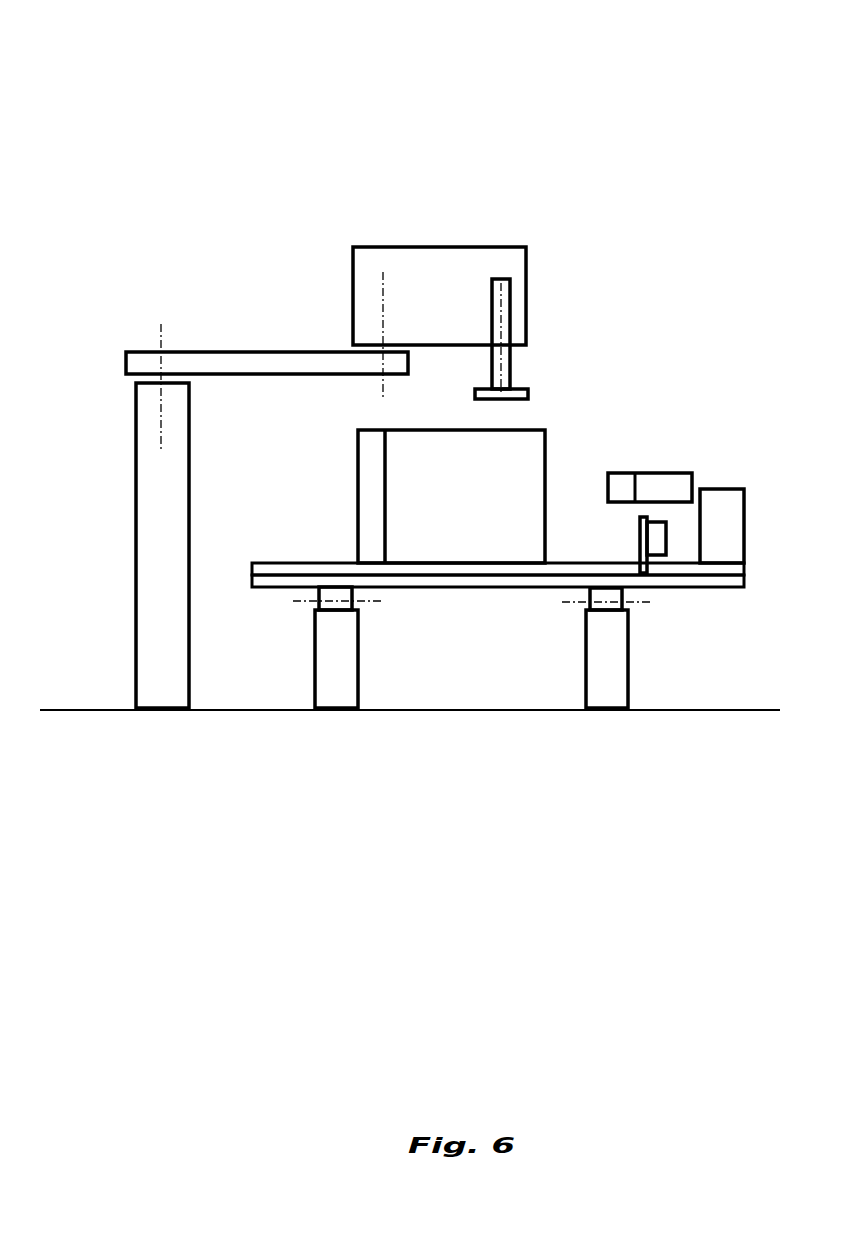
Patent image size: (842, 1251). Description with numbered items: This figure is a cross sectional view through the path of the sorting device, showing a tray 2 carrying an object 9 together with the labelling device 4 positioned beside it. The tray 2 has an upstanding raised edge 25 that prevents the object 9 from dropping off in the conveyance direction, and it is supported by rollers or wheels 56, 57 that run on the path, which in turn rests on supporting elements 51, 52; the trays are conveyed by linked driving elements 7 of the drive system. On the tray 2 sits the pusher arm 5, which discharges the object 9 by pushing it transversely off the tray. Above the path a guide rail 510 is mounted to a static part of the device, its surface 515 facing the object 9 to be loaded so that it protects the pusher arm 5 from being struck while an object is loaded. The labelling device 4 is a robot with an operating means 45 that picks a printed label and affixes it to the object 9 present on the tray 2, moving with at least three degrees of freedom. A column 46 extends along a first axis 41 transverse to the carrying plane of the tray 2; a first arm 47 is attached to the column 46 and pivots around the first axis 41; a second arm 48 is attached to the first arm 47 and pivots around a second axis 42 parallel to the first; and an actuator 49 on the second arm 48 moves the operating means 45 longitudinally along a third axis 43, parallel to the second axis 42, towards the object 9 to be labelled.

The labelling device 4 is at (192, 155).
The first axis 41 is at (160, 343).
The first arm 47 is at (230, 360).
The second arm 48 is at (440, 293).
The second axis 42 is at (383, 388).
The third axis 43 is at (503, 275).
The actuator 49 is at (513, 353).
The operating means 45 is at (528, 395).
The object 9 is at (462, 457).
The raised edge 25 is at (290, 573).
The tray 2 is at (457, 587).
The roller or wheel 56 is at (318, 607).
The roller or wheel 57 is at (588, 608).
The supporting element 51 is at (335, 688).
The supporting element 52 is at (612, 692).
The column 46 is at (165, 678).
The pusher arm 5 is at (640, 549).
The guide rail 510 is at (627, 473).
The surface 515 is at (618, 480).
The driving element 7 is at (722, 552).